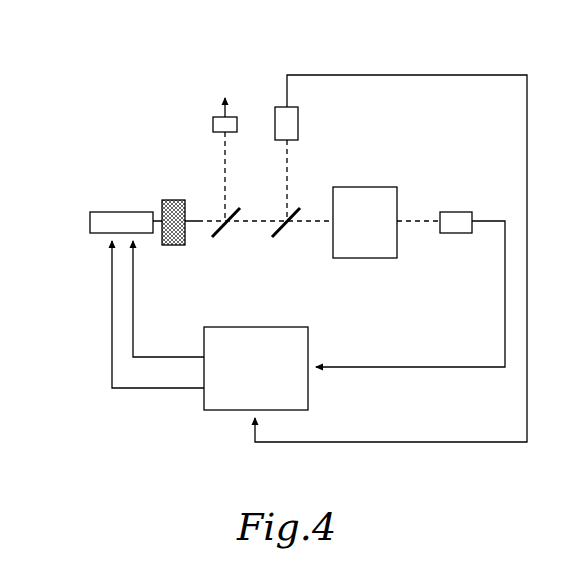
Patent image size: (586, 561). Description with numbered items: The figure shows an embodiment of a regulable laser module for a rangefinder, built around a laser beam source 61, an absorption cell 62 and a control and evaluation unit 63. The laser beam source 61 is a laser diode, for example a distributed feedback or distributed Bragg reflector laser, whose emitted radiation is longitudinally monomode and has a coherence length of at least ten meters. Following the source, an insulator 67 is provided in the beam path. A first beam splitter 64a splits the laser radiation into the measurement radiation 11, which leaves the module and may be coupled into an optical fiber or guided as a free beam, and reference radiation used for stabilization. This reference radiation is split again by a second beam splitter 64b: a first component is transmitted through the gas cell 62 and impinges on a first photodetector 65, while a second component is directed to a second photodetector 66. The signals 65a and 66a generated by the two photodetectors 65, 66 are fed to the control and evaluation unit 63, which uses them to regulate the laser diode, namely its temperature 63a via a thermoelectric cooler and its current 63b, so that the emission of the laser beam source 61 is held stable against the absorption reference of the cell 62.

The measurement radiation 11 is at (222, 103).
The laser beam source 61 is at (112, 218).
The absorption cell 62 is at (365, 222).
The control and evaluation unit 63 is at (256, 368).
The temperature regulation 63a is at (111, 353).
The current regulation 63b is at (134, 296).
The first beam splitter 64a is at (215, 233).
The second beam splitter 64b is at (296, 212).
The first photodetector 65 is at (467, 224).
The signal of first photodetector 65a is at (505, 316).
The second photodetector 66 is at (288, 113).
The signal of second photodetector 66a is at (424, 75).
The insulator 67 is at (175, 208).